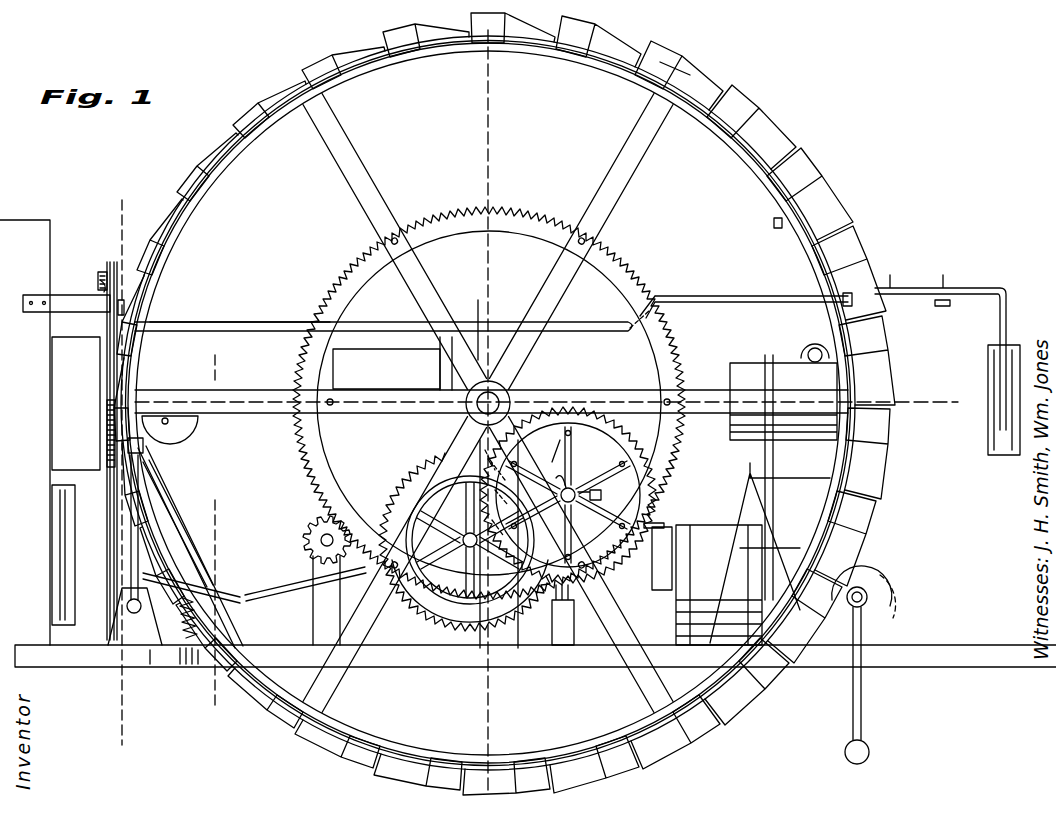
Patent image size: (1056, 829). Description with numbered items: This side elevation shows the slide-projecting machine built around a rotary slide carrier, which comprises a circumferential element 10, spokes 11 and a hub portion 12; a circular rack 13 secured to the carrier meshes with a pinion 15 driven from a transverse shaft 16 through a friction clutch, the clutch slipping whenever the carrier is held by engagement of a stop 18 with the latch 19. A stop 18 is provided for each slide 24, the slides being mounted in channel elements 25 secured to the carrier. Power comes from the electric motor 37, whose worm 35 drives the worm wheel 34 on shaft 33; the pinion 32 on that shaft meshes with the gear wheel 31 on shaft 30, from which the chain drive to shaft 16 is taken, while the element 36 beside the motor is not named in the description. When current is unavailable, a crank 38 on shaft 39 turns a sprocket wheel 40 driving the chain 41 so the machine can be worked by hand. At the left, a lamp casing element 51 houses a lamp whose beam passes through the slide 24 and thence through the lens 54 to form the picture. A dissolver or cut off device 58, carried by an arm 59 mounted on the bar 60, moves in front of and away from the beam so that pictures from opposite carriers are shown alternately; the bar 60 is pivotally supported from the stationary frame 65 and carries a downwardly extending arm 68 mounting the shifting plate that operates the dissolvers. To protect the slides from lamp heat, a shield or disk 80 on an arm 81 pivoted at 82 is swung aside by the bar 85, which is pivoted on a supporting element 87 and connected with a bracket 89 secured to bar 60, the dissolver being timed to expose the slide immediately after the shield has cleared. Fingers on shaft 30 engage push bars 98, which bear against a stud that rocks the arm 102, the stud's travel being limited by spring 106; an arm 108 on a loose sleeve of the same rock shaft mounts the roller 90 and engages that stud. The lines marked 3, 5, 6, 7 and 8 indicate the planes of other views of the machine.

The main shaft 3 is at (555, 402).
The section line 5- 5 is at (486, 404).
The section line 6- 6 is at (120, 460).
The section line 7- 7 is at (207, 530).
The lower spokes 8 is at (370, 495).
The circumferential element 10 is at (390, 60).
The spokes 11 is at (378, 190).
The hub portion 12 is at (504, 397).
The circular rack 13 is at (628, 265).
The pinion 15 is at (318, 530).
The transverse shaft 16 is at (320, 541).
The stop 18 is at (197, 432).
The latch 19 is at (162, 450).
The slide 24 is at (640, 50).
The channel elements 25 is at (688, 62).
The shaft 30 is at (478, 541).
The gear wheel 31 is at (470, 640).
The pinion 32 is at (590, 486).
The shaft 33 is at (566, 480).
The worm wheel 34 is at (600, 440).
The worm 35 is at (565, 615).
The bearing block 36 is at (646, 590).
The electric motor 37 is at (706, 525).
The crank 38 is at (862, 718).
The shaft 39 is at (870, 596).
The sprocket wheel 40 is at (870, 585).
The chain 41 is at (895, 606).
The casing element 51 is at (18, 222).
The lens 54 is at (746, 363).
The dissolver or cut off device 58 is at (992, 360).
The arm 59 is at (963, 288).
The bar 60 is at (720, 296).
The stationary frame 65 is at (506, 642).
The downwardly extending arm 68 is at (437, 370).
The shield or disk 80 is at (107, 420).
The arm 81 is at (107, 353).
The pivot 82 is at (124, 300).
The bar 85 is at (243, 322).
The supporting element 87 is at (386, 369).
The bracket 89 is at (478, 318).
The roller 90 is at (170, 440).
The push bar 98 is at (254, 591).
The arm 102 is at (130, 516).
The spring 106 is at (185, 630).
The arm 108 is at (160, 480).